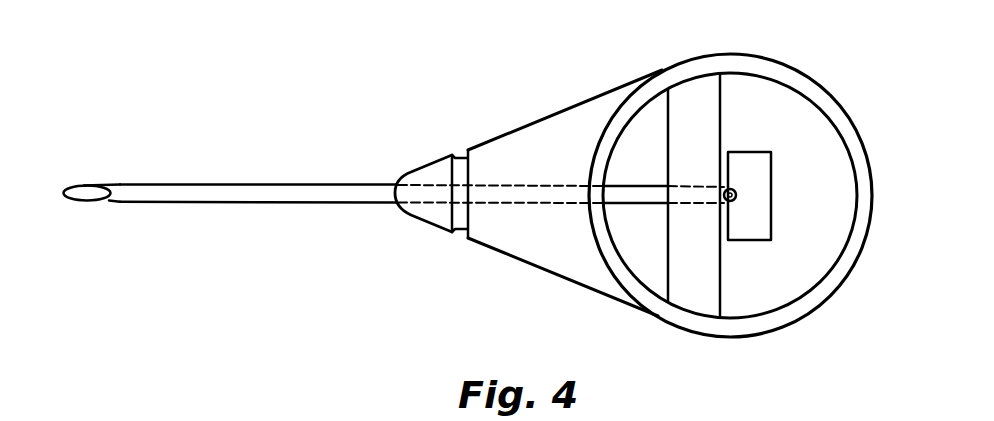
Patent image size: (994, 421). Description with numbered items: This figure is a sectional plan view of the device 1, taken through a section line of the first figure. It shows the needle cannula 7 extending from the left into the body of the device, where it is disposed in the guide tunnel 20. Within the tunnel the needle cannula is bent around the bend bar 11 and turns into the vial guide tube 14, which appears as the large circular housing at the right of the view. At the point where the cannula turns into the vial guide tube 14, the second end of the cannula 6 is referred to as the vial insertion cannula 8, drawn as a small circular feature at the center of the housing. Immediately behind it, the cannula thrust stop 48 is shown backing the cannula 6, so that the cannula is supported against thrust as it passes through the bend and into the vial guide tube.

The device 1 is at (402, 50).
The cannula 6 is at (168, 162).
The needle cannula 7 is at (257, 183).
The guide tunnel 20 is at (512, 180).
The vial guide tube 14 is at (807, 77).
The bend bar 11 is at (720, 128).
The vial insertion cannula 8 is at (735, 188).
The cannula thrust stop 48 is at (772, 213).